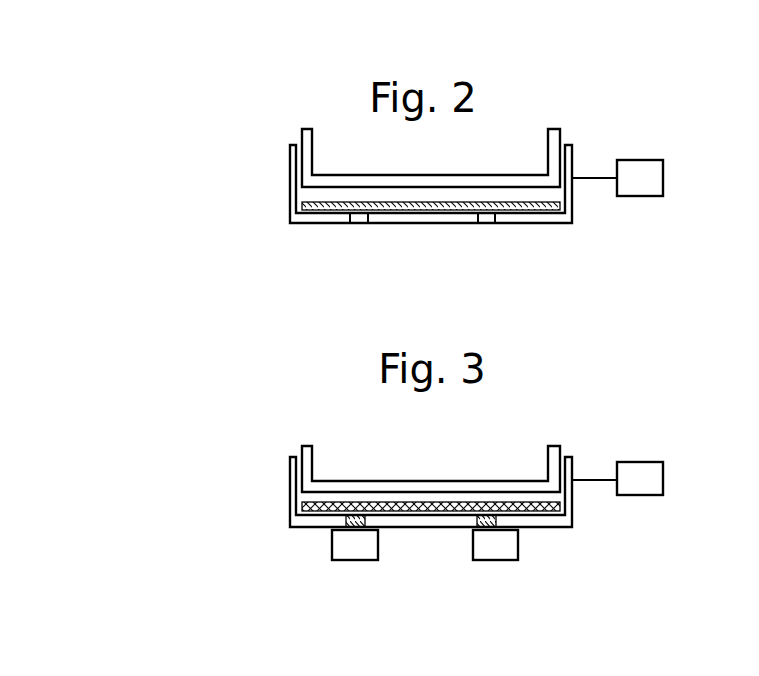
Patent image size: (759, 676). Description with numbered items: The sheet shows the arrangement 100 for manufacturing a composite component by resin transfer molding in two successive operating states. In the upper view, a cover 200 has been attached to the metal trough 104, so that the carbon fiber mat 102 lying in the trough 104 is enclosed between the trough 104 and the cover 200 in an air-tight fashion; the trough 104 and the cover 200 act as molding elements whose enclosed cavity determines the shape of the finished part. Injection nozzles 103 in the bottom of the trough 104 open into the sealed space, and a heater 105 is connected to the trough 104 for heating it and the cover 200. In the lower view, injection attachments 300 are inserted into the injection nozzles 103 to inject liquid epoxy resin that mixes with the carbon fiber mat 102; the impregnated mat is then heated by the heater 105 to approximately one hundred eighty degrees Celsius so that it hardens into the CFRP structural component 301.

In FIG. 2, the arrangement 100 is at (606, 91).
In FIG. 2, the carbon fiber mat 102 is at (408, 202).
In FIG. 2, the injection nozzles 103 is at (486, 223).
In FIG. 3, the injection nozzles 103 is at (345, 515).
In FIG. 2, the trough 104 is at (293, 146).
In FIG. 3, the trough 104 is at (293, 460).
In FIG. 2, the heater 105 is at (643, 168).
In FIG. 3, the heater 105 is at (643, 472).
In FIG. 2, the cover 200 is at (307, 134).
In FIG. 3, the cover 200 is at (307, 452).
In FIG. 3, the injection attachments 300 is at (355, 552).
In FIG. 3, the CFRP structural component 301 is at (408, 502).